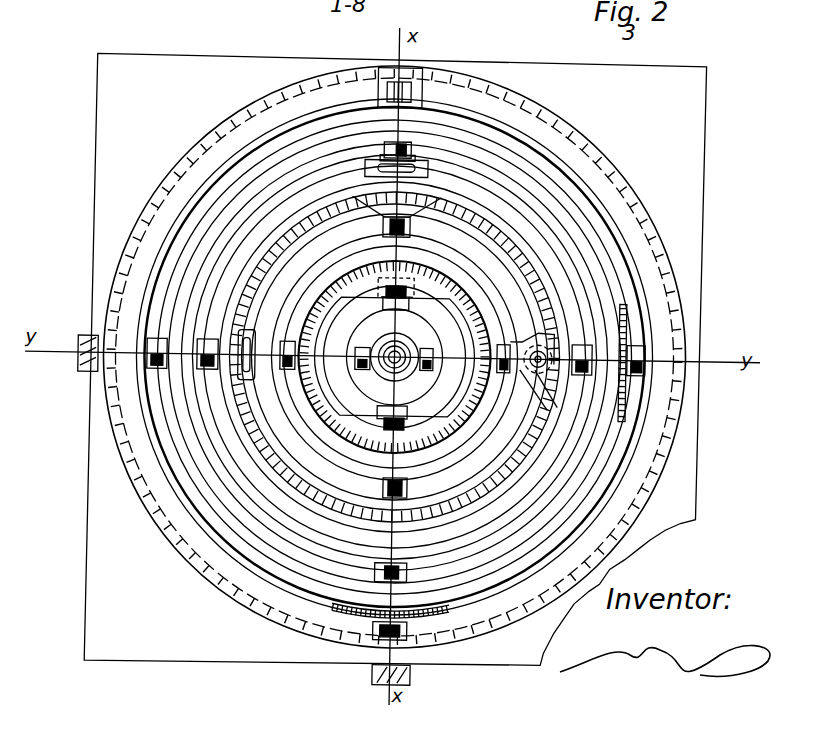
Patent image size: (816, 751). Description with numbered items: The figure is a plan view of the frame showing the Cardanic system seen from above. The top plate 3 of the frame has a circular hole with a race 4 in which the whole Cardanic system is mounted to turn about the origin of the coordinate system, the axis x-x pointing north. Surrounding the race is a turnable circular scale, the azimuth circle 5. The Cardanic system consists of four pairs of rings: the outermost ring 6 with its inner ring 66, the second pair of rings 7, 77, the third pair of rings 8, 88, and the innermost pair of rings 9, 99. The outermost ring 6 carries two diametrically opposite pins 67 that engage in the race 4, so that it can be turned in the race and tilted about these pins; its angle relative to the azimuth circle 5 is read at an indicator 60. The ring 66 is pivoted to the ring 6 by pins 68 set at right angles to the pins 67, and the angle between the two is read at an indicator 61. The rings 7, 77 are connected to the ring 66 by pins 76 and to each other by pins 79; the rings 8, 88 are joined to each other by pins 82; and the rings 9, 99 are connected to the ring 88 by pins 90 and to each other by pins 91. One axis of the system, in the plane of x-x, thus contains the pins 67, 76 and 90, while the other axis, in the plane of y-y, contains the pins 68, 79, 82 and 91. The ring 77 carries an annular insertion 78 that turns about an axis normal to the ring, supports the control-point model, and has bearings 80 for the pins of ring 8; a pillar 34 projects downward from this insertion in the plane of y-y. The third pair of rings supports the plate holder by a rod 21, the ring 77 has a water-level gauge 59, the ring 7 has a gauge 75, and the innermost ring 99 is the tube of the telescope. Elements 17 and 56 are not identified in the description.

The top plate 3 is at (690, 125).
The race 4 is at (112, 272).
The azimuth circle 5 is at (118, 302).
The outermost ring 6 is at (290, 135).
The ring 7 is at (413, 194).
The ring 8 is at (544, 298).
The ring 9 is at (386, 378).
The hatched support blocks 17 is at (86, 378).
The rod 21 is at (240, 200).
The pillar 34 is at (645, 401).
The pivot pin 56 is at (544, 366).
The water-level gauge 59 is at (240, 380).
The indicator 60 is at (444, 619).
The indicator 61 is at (335, 198).
The ring 66 is at (345, 147).
The pins 67 is at (408, 92).
The pins 68 is at (152, 370).
The gauge 75 is at (406, 170).
The pins 76 is at (401, 150).
The ring 77 is at (538, 255).
The annular insertion 78 is at (543, 275).
The pins 79 is at (205, 372).
The bearings 80 is at (377, 207).
The pins 82 is at (270, 385).
The ring 88 is at (297, 375).
The pins 90 is at (380, 288).
The pins 91 is at (435, 373).
The innermost ring 99 is at (405, 388).